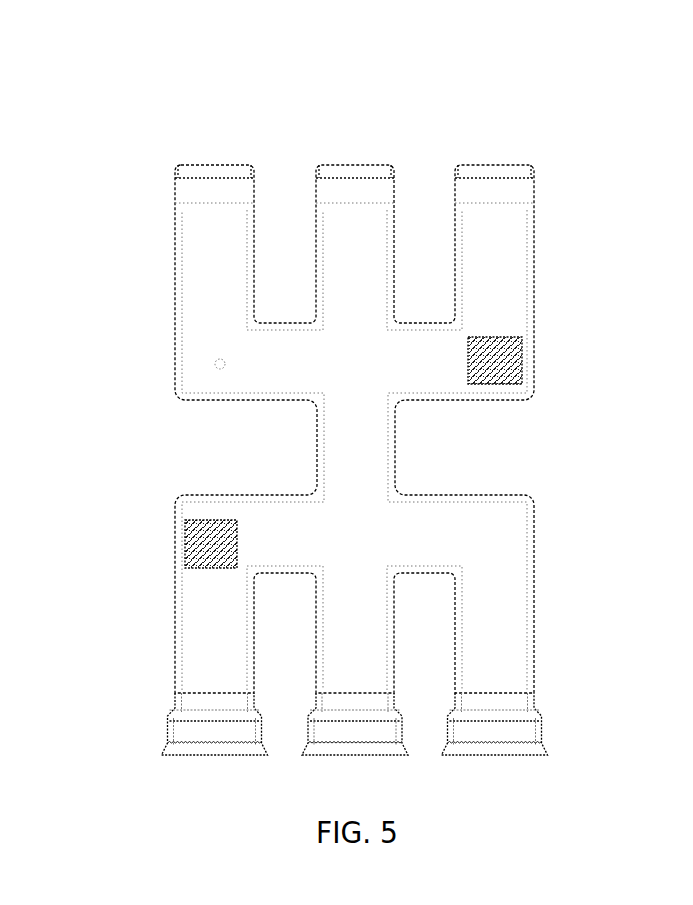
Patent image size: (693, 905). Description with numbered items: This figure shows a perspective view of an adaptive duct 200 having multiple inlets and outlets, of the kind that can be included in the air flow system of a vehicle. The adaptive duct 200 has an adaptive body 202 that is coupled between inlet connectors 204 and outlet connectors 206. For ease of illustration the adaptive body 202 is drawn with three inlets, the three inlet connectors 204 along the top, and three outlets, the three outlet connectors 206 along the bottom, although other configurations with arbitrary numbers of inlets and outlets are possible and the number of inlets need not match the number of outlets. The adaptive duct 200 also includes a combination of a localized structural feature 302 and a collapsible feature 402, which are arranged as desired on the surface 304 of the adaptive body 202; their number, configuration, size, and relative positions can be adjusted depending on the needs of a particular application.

The adaptive duct 200 is at (121, 66).
The adaptive body 202 is at (488, 532).
The inlet connector 204 is at (352, 172).
The outlet connector 206 is at (508, 736).
The localized structural feature 302 is at (500, 360).
The surface 304 is at (218, 350).
The collapsible feature 402 is at (203, 542).